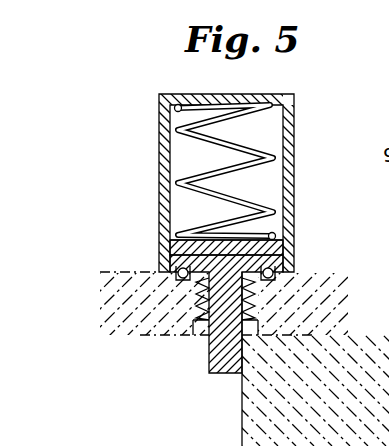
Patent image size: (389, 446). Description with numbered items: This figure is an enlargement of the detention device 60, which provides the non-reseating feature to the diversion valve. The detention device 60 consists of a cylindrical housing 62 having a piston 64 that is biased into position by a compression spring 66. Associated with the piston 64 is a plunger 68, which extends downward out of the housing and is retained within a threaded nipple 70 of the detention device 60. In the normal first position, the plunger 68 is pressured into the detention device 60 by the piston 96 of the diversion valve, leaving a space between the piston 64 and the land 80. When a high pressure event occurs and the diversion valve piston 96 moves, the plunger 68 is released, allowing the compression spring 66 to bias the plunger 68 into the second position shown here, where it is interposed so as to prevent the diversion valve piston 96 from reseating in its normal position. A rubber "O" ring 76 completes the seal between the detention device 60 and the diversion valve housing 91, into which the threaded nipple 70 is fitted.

The detention device 60 is at (138, 153).
The cylindrical housing 62 is at (294, 108).
The compression spring 66 is at (275, 160).
The piston 64 is at (283, 227).
The land 80 is at (283, 250).
The "O" ring 76 is at (294, 272).
The threaded nipple 70 is at (193, 305).
The plunger 68 is at (205, 332).
The diversion valve housing 91 is at (115, 270).
The piston 96 is at (240, 401).